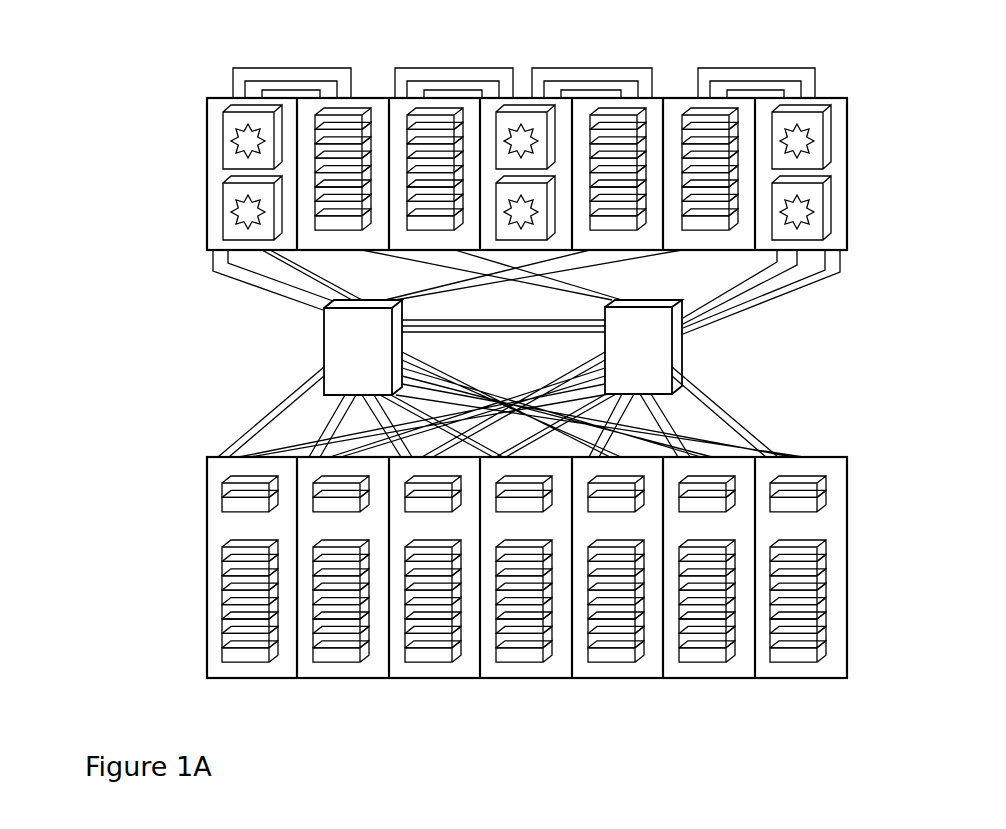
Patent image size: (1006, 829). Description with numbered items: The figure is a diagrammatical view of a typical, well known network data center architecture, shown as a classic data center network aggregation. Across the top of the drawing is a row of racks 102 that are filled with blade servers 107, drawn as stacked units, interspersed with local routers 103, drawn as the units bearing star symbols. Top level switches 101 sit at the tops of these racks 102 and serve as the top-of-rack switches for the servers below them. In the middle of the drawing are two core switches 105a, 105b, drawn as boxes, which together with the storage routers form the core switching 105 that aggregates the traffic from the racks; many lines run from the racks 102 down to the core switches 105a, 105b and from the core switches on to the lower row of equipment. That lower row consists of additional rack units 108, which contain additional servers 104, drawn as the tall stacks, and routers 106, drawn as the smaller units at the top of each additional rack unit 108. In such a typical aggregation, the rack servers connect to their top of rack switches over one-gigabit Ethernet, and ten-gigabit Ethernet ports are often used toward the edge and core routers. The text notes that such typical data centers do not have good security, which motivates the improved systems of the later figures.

The top level switches 101 is at (829, 85).
The racks 102 is at (176, 263).
The local routers 103 is at (227, 213).
The additional servers 104 is at (178, 654).
The core switches 105 is at (700, 233).
The core switch 105a is at (316, 345).
The core switch 105b is at (694, 353).
The routers 106 is at (858, 460).
The blade servers 107 is at (712, 182).
The additional rack units 108 is at (833, 690).